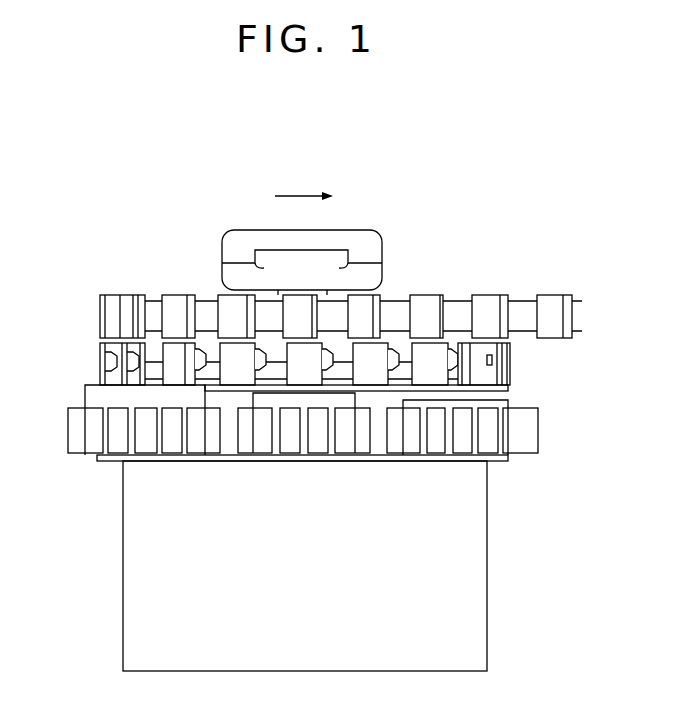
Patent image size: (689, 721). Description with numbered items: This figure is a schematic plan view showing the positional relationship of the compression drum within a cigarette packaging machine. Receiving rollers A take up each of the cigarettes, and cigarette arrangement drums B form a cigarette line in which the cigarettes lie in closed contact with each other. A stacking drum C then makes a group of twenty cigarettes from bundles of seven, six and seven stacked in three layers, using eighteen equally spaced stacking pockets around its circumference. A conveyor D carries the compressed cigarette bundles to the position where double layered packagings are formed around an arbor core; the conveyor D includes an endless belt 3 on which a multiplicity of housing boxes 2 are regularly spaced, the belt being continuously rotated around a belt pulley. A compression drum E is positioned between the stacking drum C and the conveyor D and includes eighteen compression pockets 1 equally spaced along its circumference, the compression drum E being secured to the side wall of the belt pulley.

The compression pocket 1 is at (170, 348).
The housing box 2 is at (363, 310).
The endless belt 3 is at (520, 317).
The receiving roller A is at (120, 443).
The cigarette arrangement drum B is at (93, 393).
The stacking drum C is at (506, 390).
The conveyor D is at (321, 282).
The compression drum E is at (514, 363).